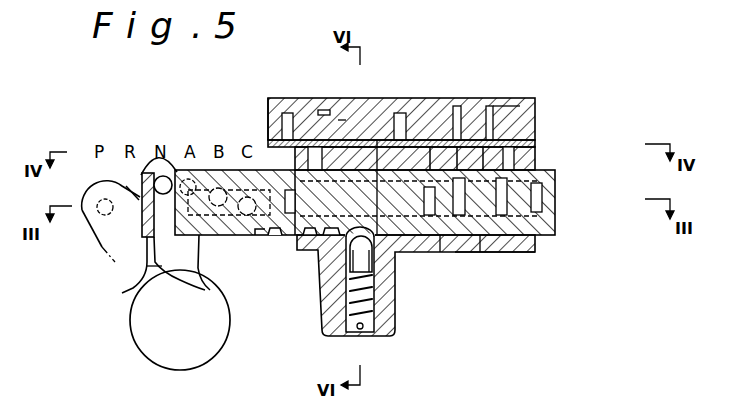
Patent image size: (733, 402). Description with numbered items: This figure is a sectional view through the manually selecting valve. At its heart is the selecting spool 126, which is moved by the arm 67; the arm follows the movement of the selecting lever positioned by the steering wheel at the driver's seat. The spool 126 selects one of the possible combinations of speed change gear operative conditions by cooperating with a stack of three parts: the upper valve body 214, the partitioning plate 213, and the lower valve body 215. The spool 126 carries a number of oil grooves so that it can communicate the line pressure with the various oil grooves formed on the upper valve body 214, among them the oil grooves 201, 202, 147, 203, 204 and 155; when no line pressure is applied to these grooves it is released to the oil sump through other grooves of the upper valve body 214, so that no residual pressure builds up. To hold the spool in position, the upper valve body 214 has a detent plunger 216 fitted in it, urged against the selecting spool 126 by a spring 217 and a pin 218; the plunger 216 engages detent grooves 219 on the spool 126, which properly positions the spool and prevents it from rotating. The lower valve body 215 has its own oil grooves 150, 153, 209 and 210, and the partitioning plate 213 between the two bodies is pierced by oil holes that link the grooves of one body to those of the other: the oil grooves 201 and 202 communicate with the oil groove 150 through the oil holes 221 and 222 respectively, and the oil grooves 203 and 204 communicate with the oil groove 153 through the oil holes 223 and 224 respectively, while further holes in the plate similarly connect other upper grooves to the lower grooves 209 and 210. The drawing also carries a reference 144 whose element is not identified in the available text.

The arm 67 is at (148, 268).
The selecting spool 126 is at (548, 179).
The valve spool 144 is at (429, 188).
The oil groove 147 is at (377, 140).
The oil groove 150 is at (325, 112).
The oil groove 153 is at (478, 100).
The oil groove 155 is at (513, 157).
The oil groove 201 is at (293, 157).
The oil groove 202 is at (348, 140).
The oil groove 203 is at (452, 150).
The oil groove 204 is at (480, 172).
The oil groove 209 is at (266, 110).
The oil groove 210 is at (398, 100).
The partitioning plate 213 is at (535, 143).
The upper valve body 214 is at (535, 244).
The lower valve body 215 is at (522, 97).
The detent plunger 216 is at (363, 257).
The spring 217 is at (372, 303).
The pin 218 is at (360, 329).
The detent grooves 219 is at (275, 236).
The oil hole 221 is at (308, 138).
The oil hole 222 is at (342, 140).
The oil hole 223 is at (455, 105).
The oil hole 224 is at (490, 97).